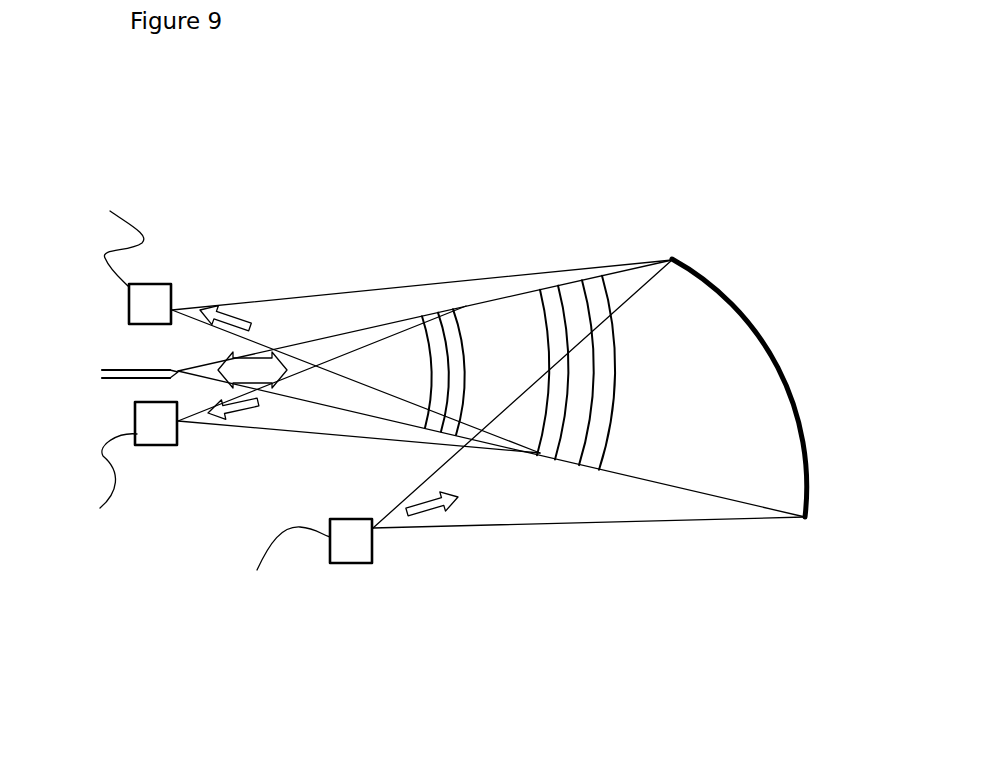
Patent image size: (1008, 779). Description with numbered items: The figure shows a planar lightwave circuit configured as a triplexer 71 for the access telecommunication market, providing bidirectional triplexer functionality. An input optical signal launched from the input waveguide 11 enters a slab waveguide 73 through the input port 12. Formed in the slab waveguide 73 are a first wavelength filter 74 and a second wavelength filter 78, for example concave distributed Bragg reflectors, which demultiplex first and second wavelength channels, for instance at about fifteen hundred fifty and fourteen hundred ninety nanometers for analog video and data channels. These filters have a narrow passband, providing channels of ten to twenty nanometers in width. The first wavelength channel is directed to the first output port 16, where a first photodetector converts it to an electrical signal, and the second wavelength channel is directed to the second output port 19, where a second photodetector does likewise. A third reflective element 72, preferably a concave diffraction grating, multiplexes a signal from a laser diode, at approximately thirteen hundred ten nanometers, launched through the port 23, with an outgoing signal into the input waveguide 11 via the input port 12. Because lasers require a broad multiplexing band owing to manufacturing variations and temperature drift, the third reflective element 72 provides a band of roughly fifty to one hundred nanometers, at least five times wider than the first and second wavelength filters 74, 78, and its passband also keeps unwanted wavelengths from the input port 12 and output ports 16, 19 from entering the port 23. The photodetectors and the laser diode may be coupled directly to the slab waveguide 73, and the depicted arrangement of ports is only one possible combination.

The triplexer 71 is at (297, 213).
The second output port 19 is at (176, 305).
The first output port 16 is at (178, 422).
The input waveguide 11 is at (112, 370).
The input port 12 is at (178, 367).
The port for laser 23 is at (375, 531).
The first wavelength filter 74 is at (450, 333).
The second wavelength filter 78 is at (583, 303).
The slab waveguide 73 is at (660, 384).
The third reflective element 72 is at (803, 445).